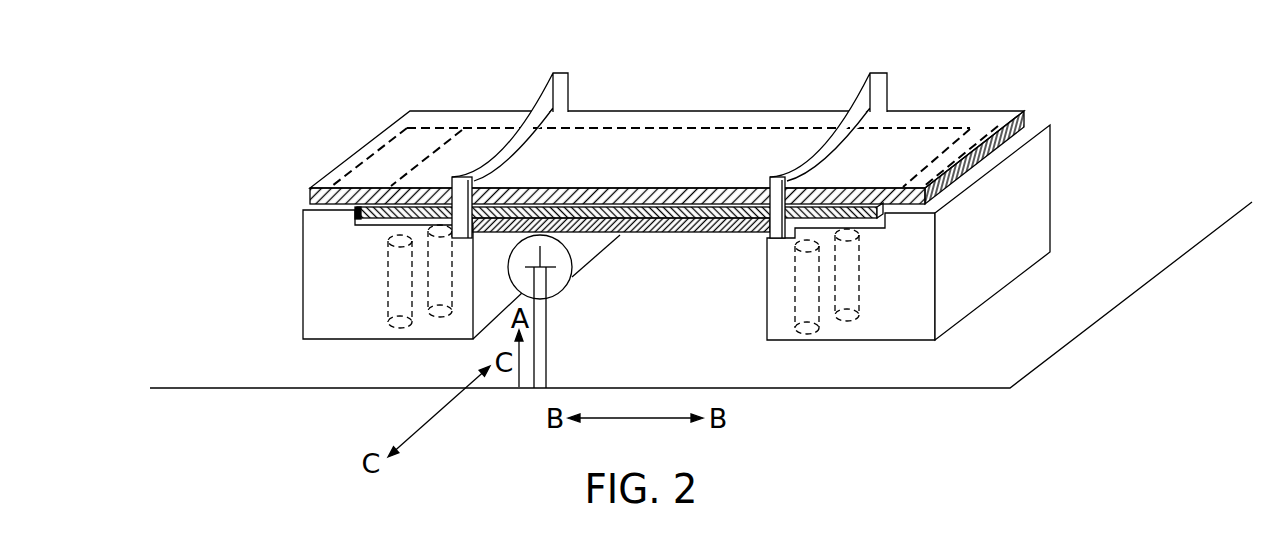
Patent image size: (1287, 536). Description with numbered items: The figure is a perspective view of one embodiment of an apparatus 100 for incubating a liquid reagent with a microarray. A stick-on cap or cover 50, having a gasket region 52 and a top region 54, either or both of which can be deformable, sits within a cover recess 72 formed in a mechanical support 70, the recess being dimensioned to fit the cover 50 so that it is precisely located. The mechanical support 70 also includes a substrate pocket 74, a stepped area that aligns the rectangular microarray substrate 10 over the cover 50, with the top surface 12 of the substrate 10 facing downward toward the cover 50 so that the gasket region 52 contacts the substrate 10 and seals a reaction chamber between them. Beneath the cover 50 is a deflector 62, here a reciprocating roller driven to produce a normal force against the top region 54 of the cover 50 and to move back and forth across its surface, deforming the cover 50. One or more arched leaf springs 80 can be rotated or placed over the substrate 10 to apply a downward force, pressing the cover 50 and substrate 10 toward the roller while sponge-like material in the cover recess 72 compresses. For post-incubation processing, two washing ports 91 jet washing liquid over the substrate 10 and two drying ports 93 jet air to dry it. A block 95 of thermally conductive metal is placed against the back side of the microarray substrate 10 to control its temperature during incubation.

The microarray substrate 10 is at (711, 207).
The top surface 12 is at (863, 222).
The cover 50 is at (621, 264).
The gasket region 52 is at (647, 237).
The top region 54 is at (732, 237).
The deflector 62 is at (562, 282).
The mechanical support 70 is at (331, 322).
The cover recess 72 is at (487, 238).
The substrate pocket 74 is at (390, 227).
The arched leaf spring 80 is at (669, 190).
The washing port 91 is at (400, 330).
The drying port 93 is at (439, 318).
The block 95 is at (973, 123).
The apparatus 100 is at (1127, 84).